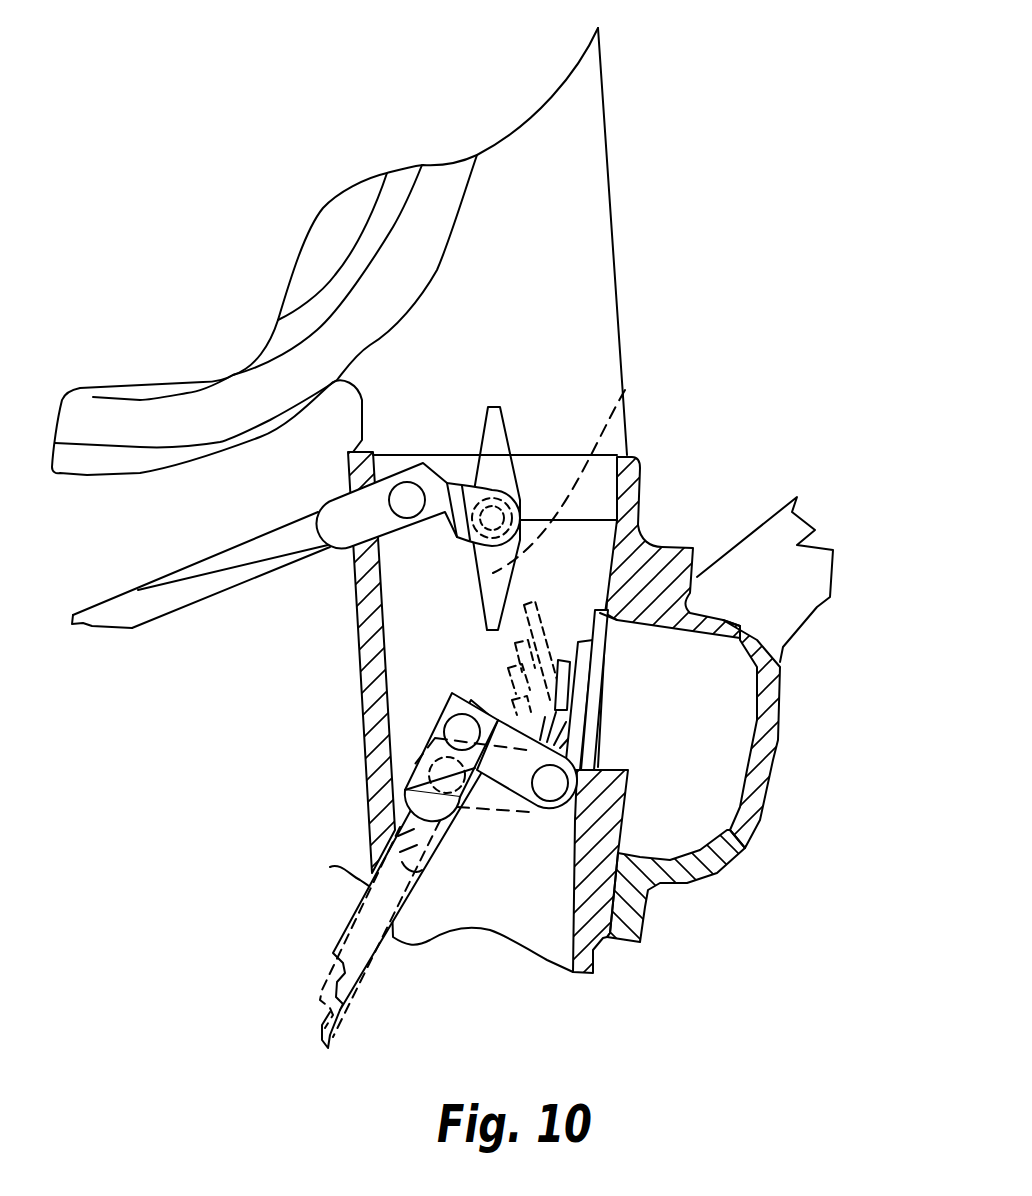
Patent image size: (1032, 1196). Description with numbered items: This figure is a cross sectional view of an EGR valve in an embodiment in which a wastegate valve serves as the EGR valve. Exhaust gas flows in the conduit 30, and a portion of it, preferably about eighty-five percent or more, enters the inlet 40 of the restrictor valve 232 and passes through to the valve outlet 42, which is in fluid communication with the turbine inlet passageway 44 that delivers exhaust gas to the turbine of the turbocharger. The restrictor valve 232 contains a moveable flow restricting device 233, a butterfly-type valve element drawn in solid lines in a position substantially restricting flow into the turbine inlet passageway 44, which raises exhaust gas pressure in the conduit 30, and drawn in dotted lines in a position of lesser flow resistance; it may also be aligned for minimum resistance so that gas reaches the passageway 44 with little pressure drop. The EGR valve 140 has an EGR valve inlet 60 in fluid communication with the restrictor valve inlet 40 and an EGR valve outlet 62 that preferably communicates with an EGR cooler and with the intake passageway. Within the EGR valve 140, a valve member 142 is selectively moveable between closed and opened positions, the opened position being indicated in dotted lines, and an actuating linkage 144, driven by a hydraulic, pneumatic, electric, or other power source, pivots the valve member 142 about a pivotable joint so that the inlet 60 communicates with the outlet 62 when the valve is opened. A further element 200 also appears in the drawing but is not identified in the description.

The conduit 30 is at (368, 700).
The inlet 40 is at (424, 590).
The valve outlet 42 is at (548, 378).
The turbine inlet passageway 44 is at (608, 170).
The EGR valve inlet 60 is at (575, 760).
The EGR valve outlet 62 is at (797, 547).
The EGR valve 140 is at (816, 656).
The valve member 142 is at (600, 653).
The actuating linkage 144 is at (390, 878).
The handle 200 is at (147, 607).
The restrictor valve 232 is at (700, 398).
The moveable flow restricting device 233 is at (625, 390).